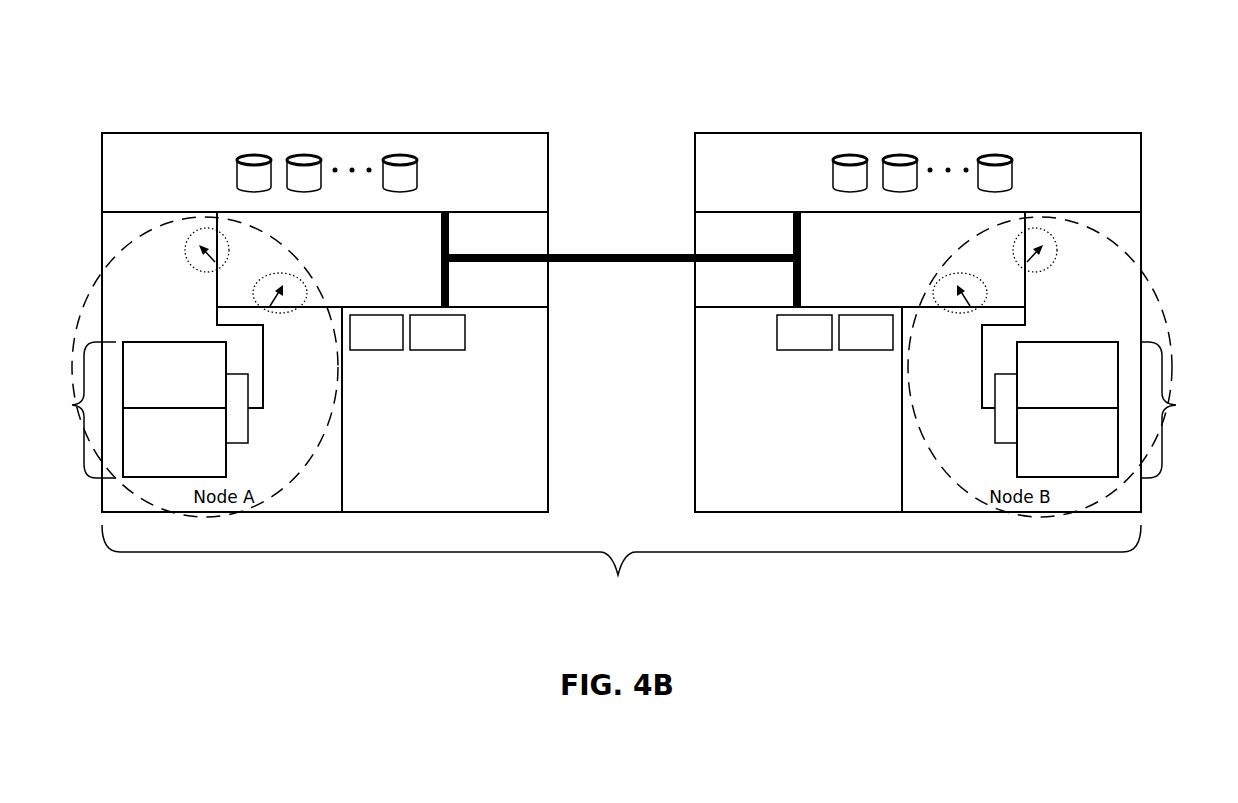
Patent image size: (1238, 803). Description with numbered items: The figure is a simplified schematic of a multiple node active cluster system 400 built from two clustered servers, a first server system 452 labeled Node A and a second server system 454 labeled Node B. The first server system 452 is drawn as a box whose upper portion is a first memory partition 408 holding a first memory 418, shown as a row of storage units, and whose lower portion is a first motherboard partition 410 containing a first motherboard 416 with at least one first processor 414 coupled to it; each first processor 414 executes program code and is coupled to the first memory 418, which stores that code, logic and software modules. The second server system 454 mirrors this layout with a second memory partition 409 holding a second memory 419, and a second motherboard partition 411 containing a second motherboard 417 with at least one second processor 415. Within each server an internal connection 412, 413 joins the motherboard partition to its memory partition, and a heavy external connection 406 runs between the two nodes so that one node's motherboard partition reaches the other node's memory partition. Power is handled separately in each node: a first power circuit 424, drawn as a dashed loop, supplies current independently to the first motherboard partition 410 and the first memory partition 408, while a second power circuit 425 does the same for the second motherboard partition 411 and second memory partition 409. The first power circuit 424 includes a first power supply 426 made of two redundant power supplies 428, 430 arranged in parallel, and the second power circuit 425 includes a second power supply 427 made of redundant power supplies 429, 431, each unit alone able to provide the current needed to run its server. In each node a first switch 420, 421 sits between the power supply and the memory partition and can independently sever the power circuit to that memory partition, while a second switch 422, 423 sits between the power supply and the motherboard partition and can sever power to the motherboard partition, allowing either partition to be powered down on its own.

The multiple node active cluster system 400 is at (621, 566).
The external connection 406 is at (620, 254).
The first memory partition 408 is at (92, 177).
The second memory partition 409 is at (1158, 182).
The first motherboard partition 410 is at (570, 407).
The second motherboard partition 411 is at (674, 452).
The internal connection 412 is at (449, 232).
The node B internal bus 413 is at (793, 278).
The first processor 414 is at (391, 341).
The second processor 415 is at (819, 341).
The first motherboard 416 is at (429, 411).
The second motherboard 417 is at (779, 411).
The first memory 418 is at (254, 157).
The second memory 419 is at (850, 157).
The first switch 420 is at (229, 238).
The first switch 421 is at (1013, 238).
The second switch 422 is at (300, 272).
The second switch 423 is at (940, 272).
The first power circuit 424 is at (88, 286).
The second power circuit 425 is at (1143, 287).
The first power supply 426 is at (70, 405).
The second power supply 427 is at (1178, 405).
The redundant power supply 428 is at (158, 384).
The redundant power supply 429 is at (1051, 384).
The redundant power supply 430 is at (158, 452).
The redundant power supply 431 is at (1051, 452).
The first server system 452 is at (168, 92).
The second server system 454 is at (760, 70).